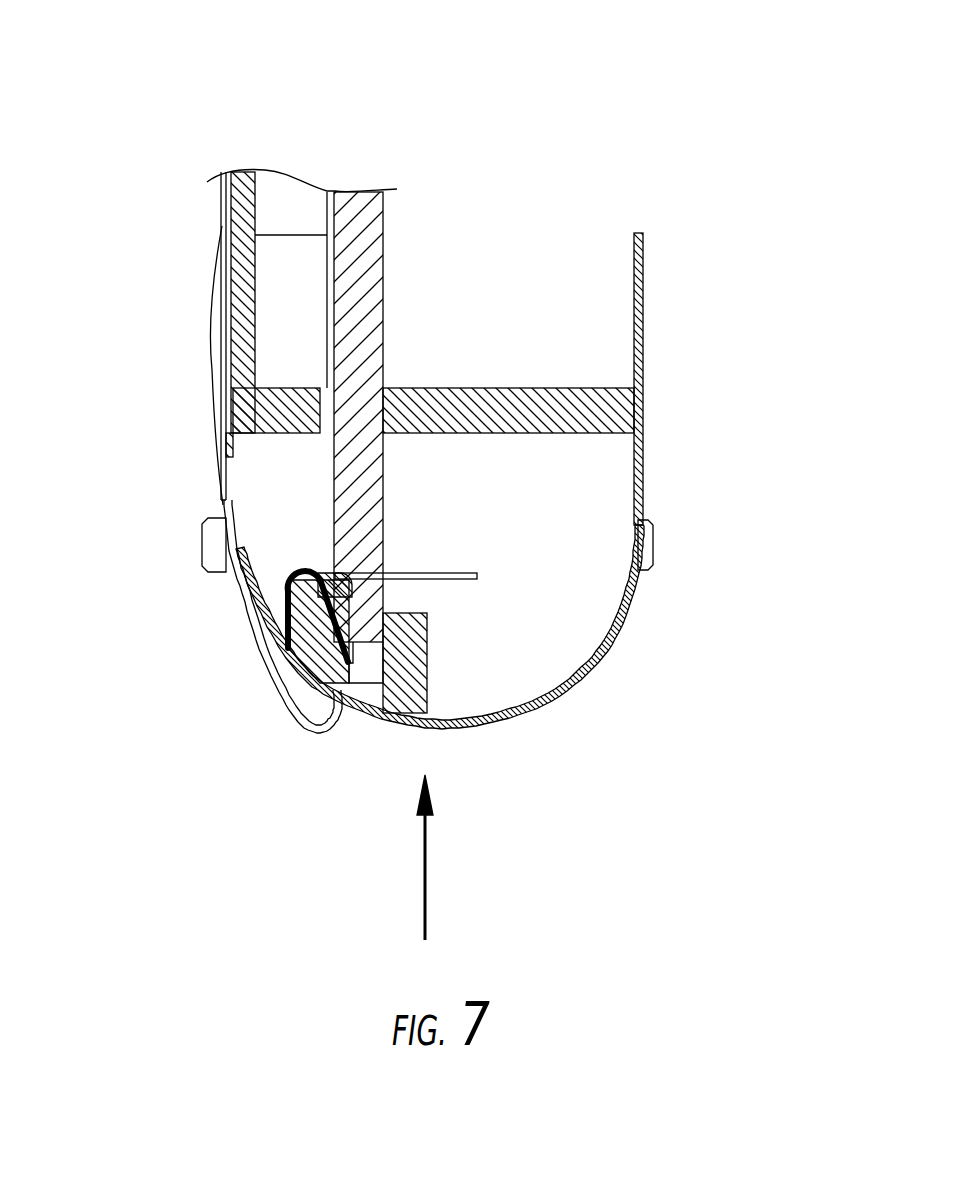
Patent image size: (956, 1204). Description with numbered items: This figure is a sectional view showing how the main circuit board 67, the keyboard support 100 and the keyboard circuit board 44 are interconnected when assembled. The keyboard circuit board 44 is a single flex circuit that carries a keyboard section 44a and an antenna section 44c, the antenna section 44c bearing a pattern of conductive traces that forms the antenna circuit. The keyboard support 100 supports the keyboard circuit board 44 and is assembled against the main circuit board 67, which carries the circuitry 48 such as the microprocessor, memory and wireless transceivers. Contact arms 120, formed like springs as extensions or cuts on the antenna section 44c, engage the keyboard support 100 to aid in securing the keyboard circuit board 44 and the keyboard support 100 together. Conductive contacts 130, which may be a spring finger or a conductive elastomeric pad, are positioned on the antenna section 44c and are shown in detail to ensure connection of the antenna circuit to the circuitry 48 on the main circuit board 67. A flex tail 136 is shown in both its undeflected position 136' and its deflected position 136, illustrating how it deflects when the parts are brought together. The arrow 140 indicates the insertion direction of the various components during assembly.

The keyboard circuit board 44 is at (222, 224).
The keyboard section 44a is at (228, 172).
The antenna section 44c is at (618, 613).
The circuitry 48 is at (335, 480).
The main circuit board 67 is at (360, 380).
The keyboard support 100 is at (410, 676).
The contact arms 120 is at (383, 645).
The conductive contacts 130 is at (287, 635).
The flex tail 136 is at (594, 511).
The flex tail in undeflected position 136' is at (572, 488).
The insertion direction arrow 140 is at (423, 868).